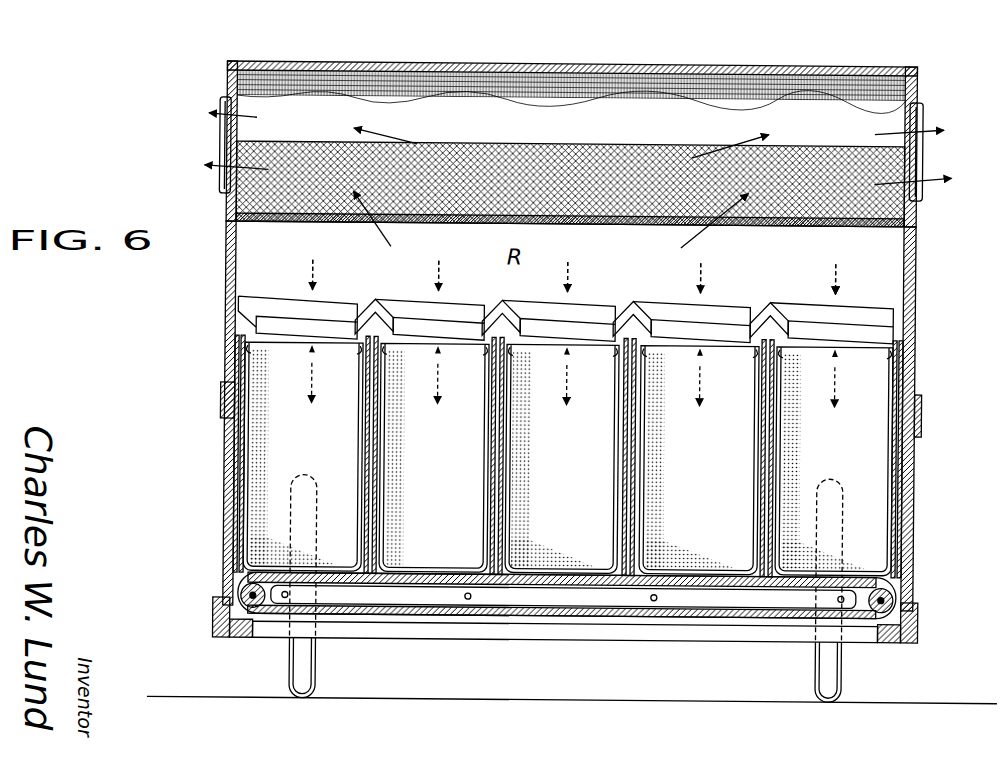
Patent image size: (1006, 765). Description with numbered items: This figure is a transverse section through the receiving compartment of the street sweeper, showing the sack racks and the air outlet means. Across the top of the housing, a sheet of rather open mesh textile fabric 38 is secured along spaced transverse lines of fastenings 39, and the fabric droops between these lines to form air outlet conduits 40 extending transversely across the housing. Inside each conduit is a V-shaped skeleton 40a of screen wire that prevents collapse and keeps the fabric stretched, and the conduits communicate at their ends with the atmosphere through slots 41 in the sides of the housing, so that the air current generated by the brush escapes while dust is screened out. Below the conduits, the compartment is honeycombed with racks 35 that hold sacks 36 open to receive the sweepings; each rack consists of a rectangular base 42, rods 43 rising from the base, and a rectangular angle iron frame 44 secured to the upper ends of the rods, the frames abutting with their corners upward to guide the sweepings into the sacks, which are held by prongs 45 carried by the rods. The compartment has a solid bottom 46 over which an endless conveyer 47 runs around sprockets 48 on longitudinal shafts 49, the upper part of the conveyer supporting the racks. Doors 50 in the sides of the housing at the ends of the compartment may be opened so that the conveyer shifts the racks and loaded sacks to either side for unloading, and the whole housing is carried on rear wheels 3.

The rear wheels 3 is at (303, 690).
The rack 35 is at (601, 306).
The sack 36 is at (568, 459).
The open mesh textile fabric 38 is at (446, 88).
The transverse lines of fastenings 39 is at (618, 75).
The air outlet conduit 40 is at (835, 95).
The V-shaped skeleton 40a is at (578, 163).
The slot 41 is at (225, 134).
The rectangular base 42 is at (349, 557).
The rod 43 is at (373, 445).
The rectangular angle iron frame 44 is at (397, 308).
The prong 45 is at (253, 357).
The solid bottom 46 is at (576, 598).
The endless conveyer 47 is at (617, 597).
The sprocket 48 is at (250, 633).
The longitudinal shaft 49 is at (236, 610).
The door 50 is at (226, 256).